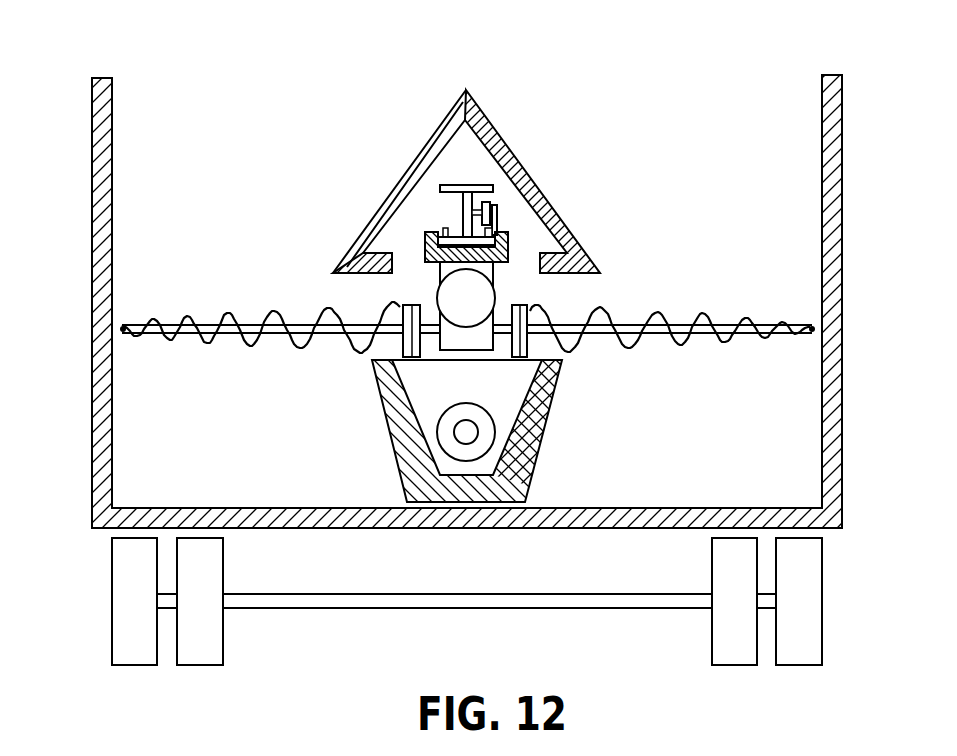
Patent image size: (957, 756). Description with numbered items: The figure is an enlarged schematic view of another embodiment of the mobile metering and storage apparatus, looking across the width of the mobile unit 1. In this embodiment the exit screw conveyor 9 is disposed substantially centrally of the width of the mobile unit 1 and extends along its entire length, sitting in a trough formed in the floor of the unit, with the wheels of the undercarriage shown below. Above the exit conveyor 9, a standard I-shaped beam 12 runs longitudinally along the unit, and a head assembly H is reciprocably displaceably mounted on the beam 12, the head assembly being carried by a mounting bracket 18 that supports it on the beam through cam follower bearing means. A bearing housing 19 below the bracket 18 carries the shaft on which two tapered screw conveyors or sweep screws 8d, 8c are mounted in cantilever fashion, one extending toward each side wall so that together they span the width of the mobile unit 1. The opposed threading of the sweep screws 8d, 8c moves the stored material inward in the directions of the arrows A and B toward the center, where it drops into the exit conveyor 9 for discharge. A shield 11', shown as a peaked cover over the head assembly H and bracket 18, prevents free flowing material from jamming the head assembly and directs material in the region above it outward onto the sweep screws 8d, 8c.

The mobile unit 1 is at (74, 106).
The shield 11' is at (466, 177).
The I-shaped beam 12 is at (462, 209).
The head assembly H is at (473, 178).
The mounting bracket 18 is at (506, 250).
The bearing housing 19 is at (448, 292).
The tapered screw conveyor or sweep screw 8d is at (229, 298).
The tapered screw conveyor or sweep screw 8c is at (688, 308).
The exit screw conveyor 9 is at (460, 410).
The direction of material delivery A is at (670, 362).
The direction of material delivery B is at (200, 362).